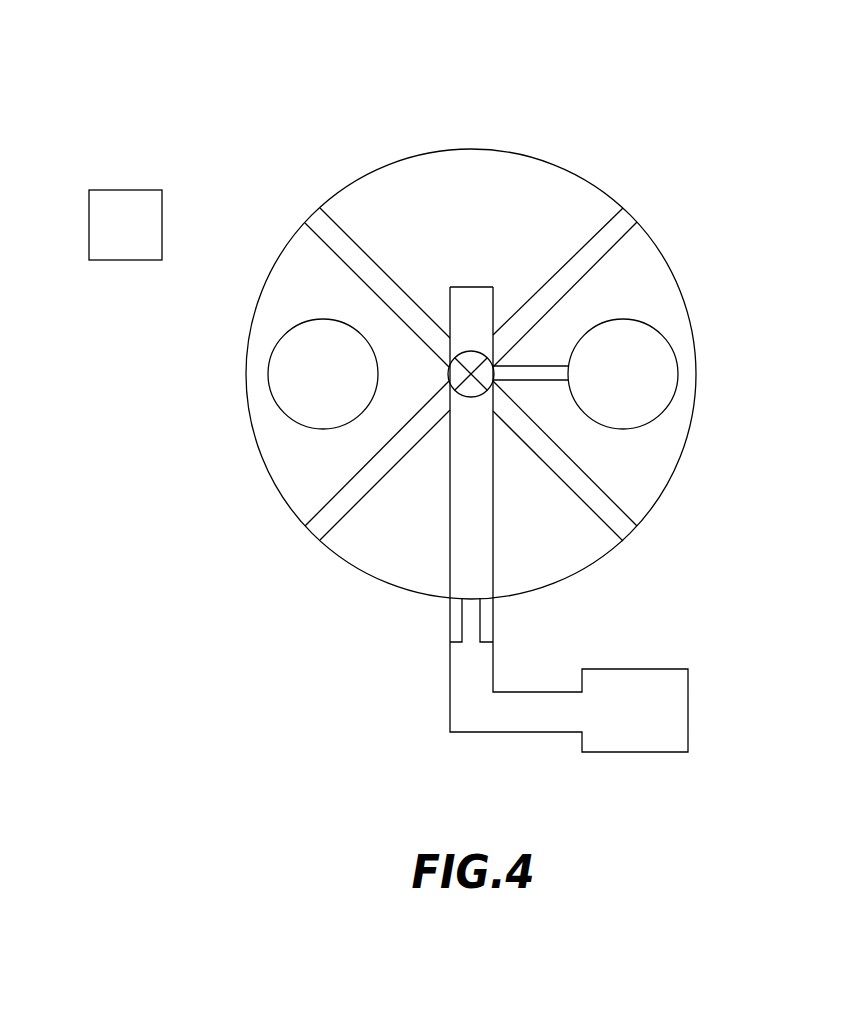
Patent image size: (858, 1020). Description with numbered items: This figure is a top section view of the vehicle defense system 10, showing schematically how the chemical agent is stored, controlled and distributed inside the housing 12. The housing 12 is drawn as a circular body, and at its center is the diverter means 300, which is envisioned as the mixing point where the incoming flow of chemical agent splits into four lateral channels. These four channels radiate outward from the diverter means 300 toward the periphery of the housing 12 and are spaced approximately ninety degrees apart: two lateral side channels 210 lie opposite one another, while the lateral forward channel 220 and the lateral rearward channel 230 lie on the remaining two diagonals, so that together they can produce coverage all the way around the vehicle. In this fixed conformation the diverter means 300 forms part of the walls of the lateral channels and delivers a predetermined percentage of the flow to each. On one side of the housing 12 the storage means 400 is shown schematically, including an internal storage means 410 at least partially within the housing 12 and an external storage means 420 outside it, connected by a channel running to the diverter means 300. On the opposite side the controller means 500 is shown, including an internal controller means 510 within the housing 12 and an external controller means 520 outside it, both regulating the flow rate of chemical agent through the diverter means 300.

The vehicle defense system 10 is at (628, 87).
The housing 12 is at (403, 158).
The lateral side channels 210 is at (292, 205).
The lateral forward channel 220 is at (650, 197).
The lateral rearward channel 230 is at (291, 546).
The diverter means 300 is at (470, 352).
The storage means 400 is at (633, 519).
The internal storage means 410 is at (665, 342).
The external storage means 420 is at (569, 519).
The controller means 500 is at (229, 280).
The internal controller means 510 is at (300, 322).
The external controller means 520 is at (450, 363).